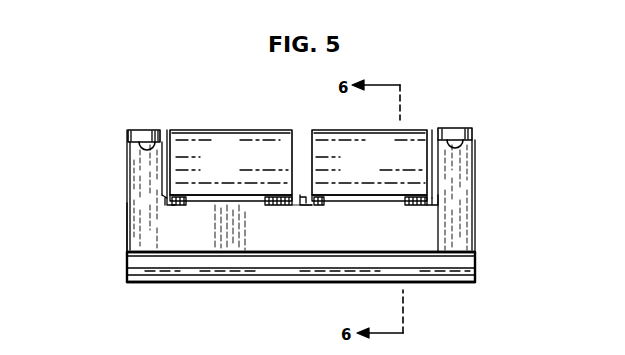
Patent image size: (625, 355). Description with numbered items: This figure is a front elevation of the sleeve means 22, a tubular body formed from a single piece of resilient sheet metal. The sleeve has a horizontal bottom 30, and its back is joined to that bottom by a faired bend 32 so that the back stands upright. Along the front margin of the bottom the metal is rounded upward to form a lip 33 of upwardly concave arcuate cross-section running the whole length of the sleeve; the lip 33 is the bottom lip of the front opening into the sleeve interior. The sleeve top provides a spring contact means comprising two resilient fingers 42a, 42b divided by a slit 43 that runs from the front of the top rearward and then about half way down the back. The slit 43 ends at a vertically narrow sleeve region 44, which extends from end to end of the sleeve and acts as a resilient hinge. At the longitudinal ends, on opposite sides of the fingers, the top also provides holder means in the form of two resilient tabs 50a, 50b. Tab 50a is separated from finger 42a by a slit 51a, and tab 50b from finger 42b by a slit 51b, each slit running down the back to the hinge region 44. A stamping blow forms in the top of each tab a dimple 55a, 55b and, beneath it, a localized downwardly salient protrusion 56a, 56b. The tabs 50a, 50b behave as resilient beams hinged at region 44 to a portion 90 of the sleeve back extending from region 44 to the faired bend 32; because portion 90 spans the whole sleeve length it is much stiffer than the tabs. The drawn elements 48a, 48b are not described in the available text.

The sleeve means 22 is at (478, 240).
The horizontal bottom 30 is at (433, 284).
The faired bend 32 is at (118, 255).
The lip 33 is at (335, 250).
The portion of sleeve back 90 is at (113, 203).
The resilient finger 42a is at (252, 165).
The resilient finger 42b is at (396, 165).
The slit 43 is at (301, 144).
The sleeve region (resilient hinge) 44 is at (163, 200).
The first comb teeth 48a is at (267, 202).
The second comb teeth 48b is at (388, 201).
The resilient tab 50a is at (132, 130).
The resilient tab 50b is at (473, 128).
The slit 51a is at (167, 131).
The slit 51b is at (433, 128).
The dimple 55a is at (146, 131).
The dimple 55b is at (458, 128).
The protrusion 56a is at (139, 147).
The protrusion 56b is at (458, 144).